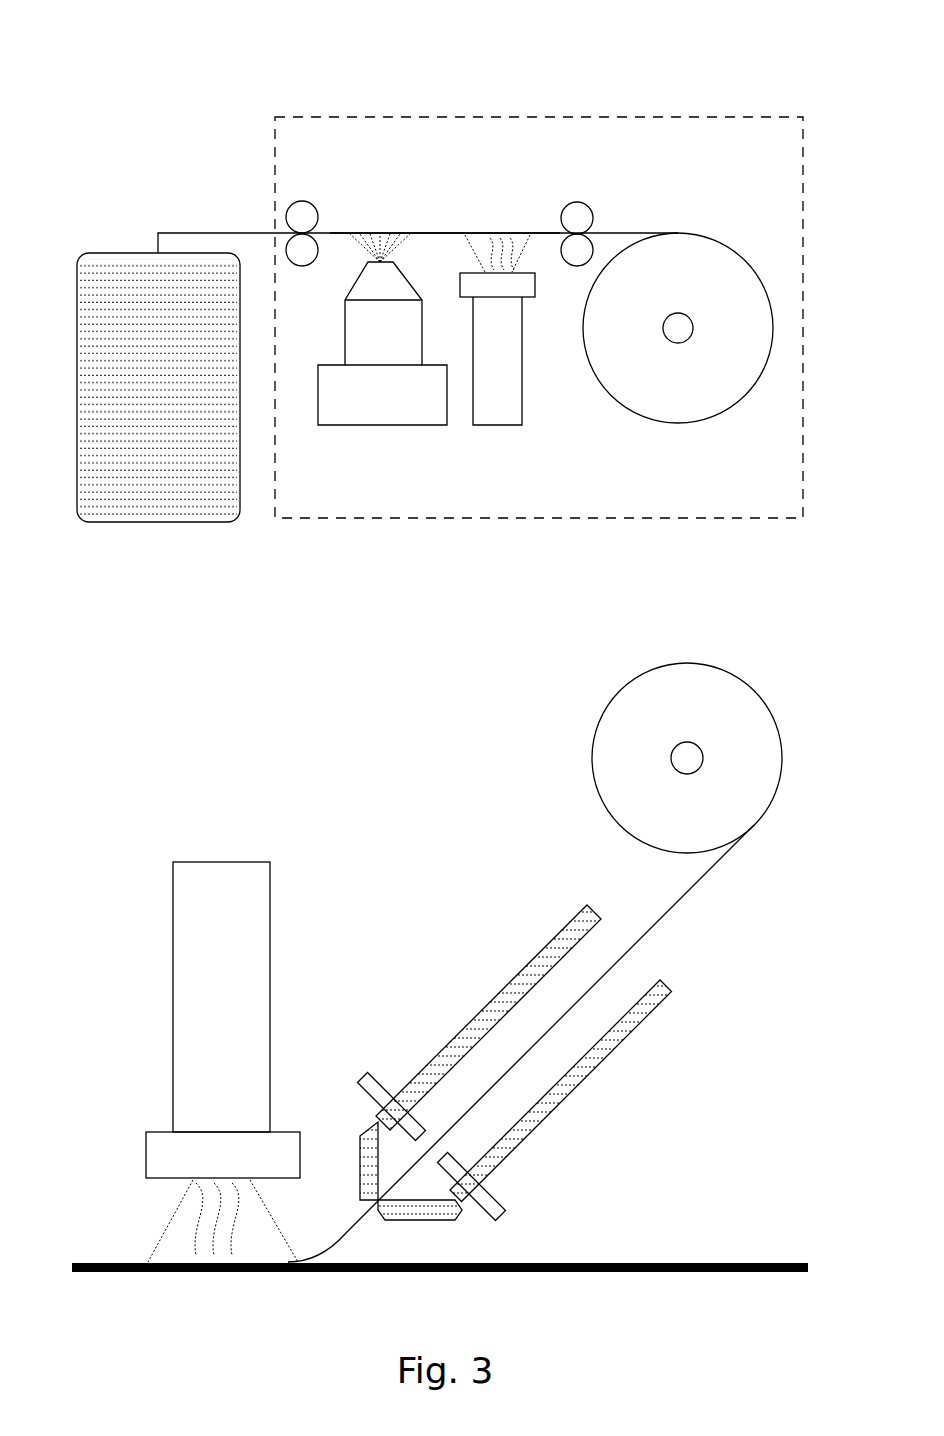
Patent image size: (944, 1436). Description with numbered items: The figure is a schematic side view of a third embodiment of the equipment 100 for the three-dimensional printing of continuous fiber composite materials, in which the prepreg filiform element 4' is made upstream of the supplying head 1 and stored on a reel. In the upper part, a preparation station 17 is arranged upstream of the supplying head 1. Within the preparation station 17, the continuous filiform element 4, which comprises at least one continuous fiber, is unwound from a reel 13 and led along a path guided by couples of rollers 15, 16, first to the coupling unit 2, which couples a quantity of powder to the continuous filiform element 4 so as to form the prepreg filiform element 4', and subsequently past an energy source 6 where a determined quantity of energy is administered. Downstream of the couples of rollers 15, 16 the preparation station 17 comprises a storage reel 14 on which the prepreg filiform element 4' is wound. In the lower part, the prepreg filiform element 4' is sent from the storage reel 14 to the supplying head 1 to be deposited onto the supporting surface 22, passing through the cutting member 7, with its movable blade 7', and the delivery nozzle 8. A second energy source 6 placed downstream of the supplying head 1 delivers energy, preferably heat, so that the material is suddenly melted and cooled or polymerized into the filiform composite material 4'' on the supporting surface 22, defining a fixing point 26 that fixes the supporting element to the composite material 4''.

The preparation station 17 is at (656, 110).
The continuous filiform element 4 is at (418, 212).
The reel 13 is at (165, 522).
The couple of rollers 15 is at (300, 201).
The couple of rollers 16 is at (577, 202).
The coupling unit 2 is at (385, 425).
The energy source 6 is at (496, 425).
The storage reel 14 is at (775, 330).
The prepreg filiform element 4' is at (445, 201).
The filiform composite material 4'' is at (575, 964).
The equipment for three-dimensional printing of continuous fiber composite materials 100 is at (430, 812).
The supplying head 1 is at (547, 947).
The movable blade 7' is at (376, 1090).
The cutting member 7 is at (512, 1187).
The delivery nozzle 8 is at (410, 1220).
The supporting surface 22 is at (708, 1272).
The fixing point 26 is at (85, 1262).